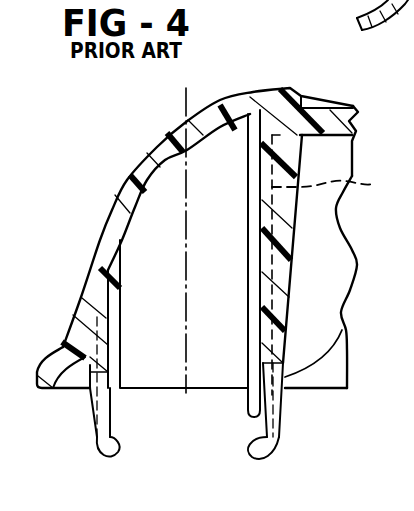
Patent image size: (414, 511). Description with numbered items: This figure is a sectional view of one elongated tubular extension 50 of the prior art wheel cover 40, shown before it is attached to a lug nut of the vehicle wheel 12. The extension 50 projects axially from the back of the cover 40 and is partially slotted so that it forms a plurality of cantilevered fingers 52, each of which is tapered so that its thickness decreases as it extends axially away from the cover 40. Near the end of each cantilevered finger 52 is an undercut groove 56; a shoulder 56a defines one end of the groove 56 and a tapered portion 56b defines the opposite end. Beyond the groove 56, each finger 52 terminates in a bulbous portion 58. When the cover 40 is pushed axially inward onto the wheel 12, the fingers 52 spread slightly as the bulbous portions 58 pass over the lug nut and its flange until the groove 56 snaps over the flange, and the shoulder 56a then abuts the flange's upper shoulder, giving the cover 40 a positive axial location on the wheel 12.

The wheel cover 40 is at (84, 216).
The tubular partially slotted extension 50 is at (373, 185).
The cantilevered finger 52 is at (343, 312).
The undercut groove 56 is at (193, 302).
The shoulder 56a is at (258, 416).
The tapered portion 56b is at (98, 443).
The bulbous portion 58 is at (268, 455).
The vehicle wheel 12 is at (401, 439).